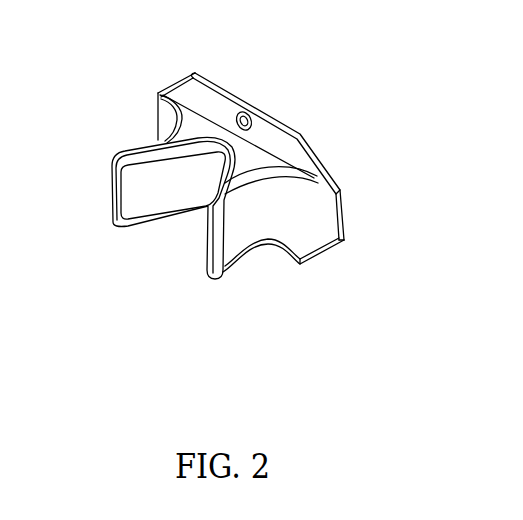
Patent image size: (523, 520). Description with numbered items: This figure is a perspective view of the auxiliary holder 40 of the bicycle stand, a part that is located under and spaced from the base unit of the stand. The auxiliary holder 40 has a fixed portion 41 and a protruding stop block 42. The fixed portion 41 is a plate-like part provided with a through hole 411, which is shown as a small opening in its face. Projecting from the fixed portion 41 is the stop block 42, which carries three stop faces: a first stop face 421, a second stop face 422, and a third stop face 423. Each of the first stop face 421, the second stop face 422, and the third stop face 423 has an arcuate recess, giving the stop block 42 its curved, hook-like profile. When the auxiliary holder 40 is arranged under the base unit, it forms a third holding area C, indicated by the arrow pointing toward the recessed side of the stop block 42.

The auxiliary holder 40 is at (281, 98).
The fixed portion 41 is at (288, 146).
The through hole 411 is at (240, 112).
The stop block 42 is at (187, 205).
The first stop face 421 is at (195, 180).
The second stop face 422 is at (165, 122).
The third stop face 423 is at (271, 218).
The third holding area C is at (372, 232).